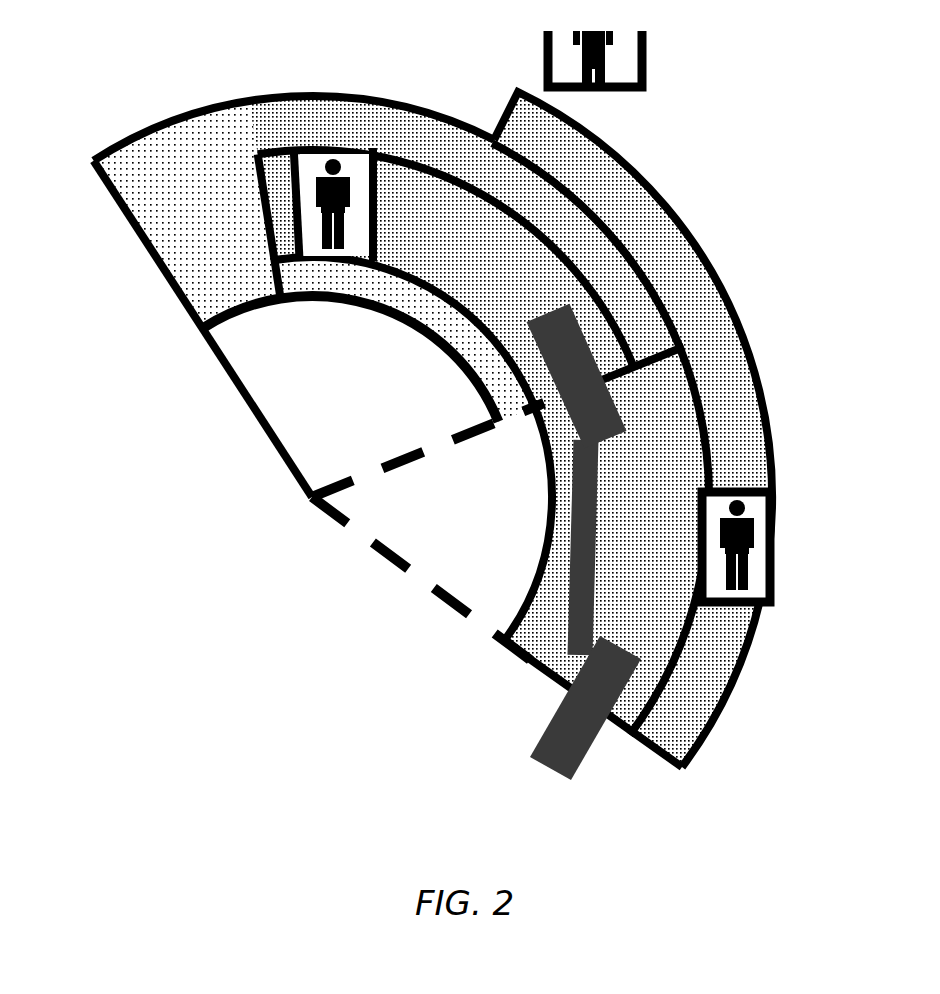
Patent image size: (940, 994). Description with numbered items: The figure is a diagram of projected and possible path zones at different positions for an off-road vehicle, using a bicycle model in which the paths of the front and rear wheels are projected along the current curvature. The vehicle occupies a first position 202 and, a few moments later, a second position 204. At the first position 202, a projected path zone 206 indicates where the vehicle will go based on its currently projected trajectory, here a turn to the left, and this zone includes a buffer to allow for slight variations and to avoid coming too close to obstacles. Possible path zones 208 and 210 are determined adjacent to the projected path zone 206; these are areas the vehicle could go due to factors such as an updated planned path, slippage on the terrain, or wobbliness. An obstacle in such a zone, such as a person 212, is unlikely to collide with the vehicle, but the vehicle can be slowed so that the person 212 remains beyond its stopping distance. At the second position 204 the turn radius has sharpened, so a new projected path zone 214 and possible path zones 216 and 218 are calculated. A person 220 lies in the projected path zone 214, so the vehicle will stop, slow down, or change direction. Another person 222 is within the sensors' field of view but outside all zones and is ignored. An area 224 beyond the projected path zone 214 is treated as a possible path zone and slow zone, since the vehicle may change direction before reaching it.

The first position 202 is at (580, 760).
The second position 204 is at (587, 347).
The projected path zone 206 is at (686, 470).
The possible path zone 208 is at (741, 412).
The possible path zone 210 is at (548, 565).
The person 212 is at (772, 562).
The projected path zone 214 is at (459, 232).
The possible path zone 216 is at (358, 120).
The possible path zone 218 is at (421, 312).
The person 220 is at (327, 170).
The person 222 is at (612, 62).
The area 224 is at (225, 207).